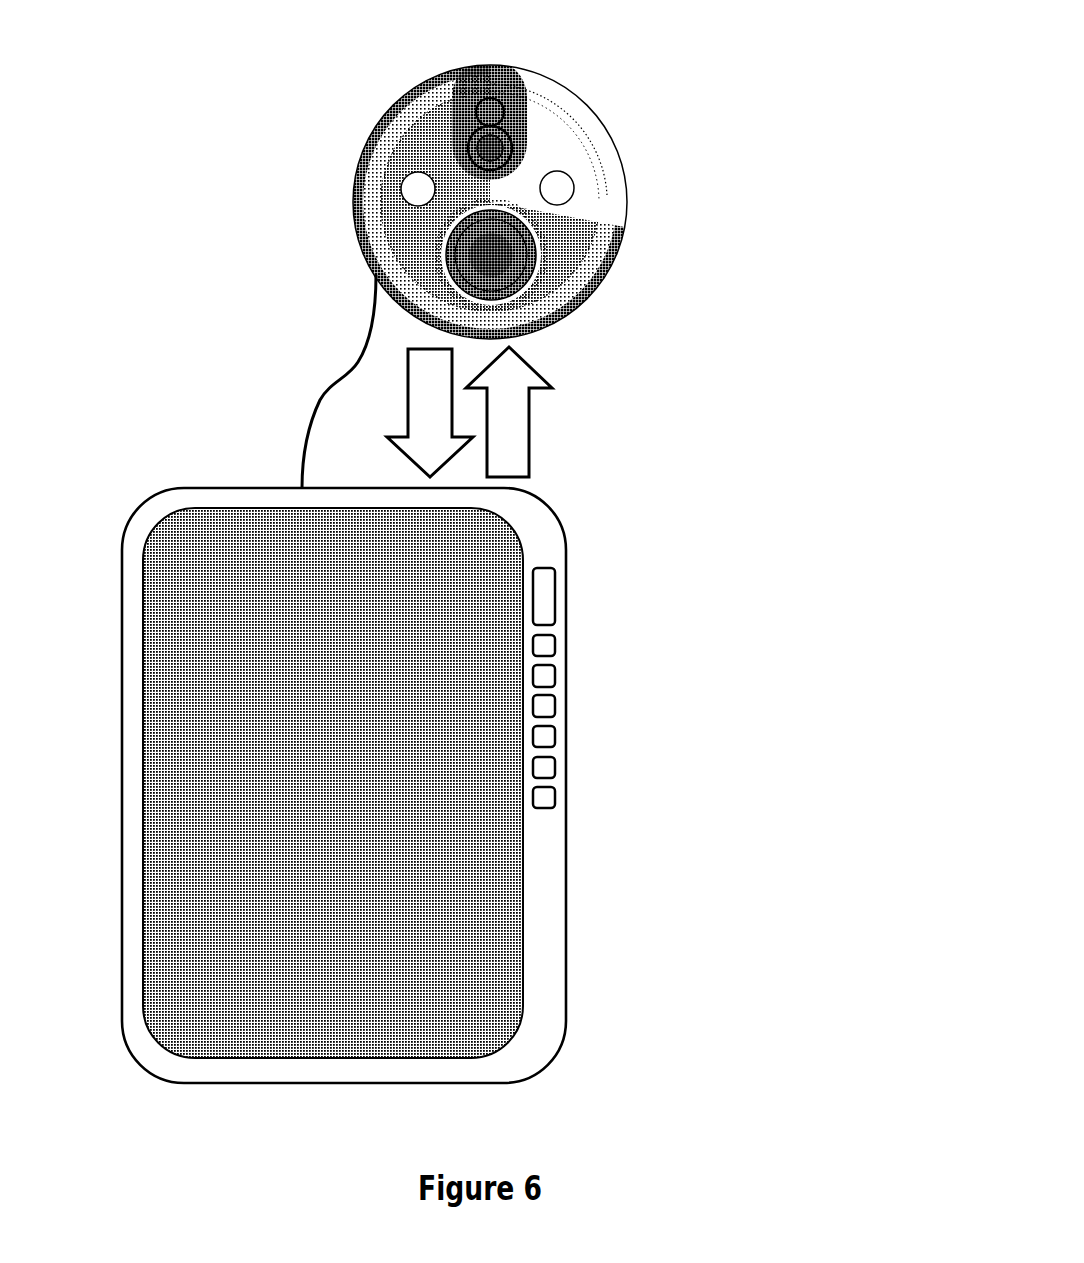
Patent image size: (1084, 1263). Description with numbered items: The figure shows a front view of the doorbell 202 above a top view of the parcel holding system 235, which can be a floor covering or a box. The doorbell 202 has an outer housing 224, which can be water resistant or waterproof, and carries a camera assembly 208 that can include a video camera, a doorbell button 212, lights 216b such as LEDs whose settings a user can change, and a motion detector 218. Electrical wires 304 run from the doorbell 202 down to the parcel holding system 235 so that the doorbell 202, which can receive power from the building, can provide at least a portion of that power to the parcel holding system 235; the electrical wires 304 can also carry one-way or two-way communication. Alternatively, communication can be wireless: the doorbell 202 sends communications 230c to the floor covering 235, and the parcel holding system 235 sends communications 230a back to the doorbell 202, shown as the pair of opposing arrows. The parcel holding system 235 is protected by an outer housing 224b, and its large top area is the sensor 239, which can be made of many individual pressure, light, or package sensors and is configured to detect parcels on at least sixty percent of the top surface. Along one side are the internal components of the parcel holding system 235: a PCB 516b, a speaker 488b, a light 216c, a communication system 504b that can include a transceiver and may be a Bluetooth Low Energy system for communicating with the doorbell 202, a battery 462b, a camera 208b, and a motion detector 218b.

The doorbell 202 is at (414, 175).
The camera assembly 208 is at (508, 138).
The doorbell button 212 is at (449, 263).
The light 216b is at (418, 171).
The motion detector 218 is at (495, 99).
The outer housing 224 is at (356, 229).
The communications 230a is at (530, 408).
The communications 230c is at (422, 467).
The parcel holding system 235 is at (526, 730).
The sensor 239 is at (522, 938).
The electrical wires 304 is at (372, 335).
The outer housing 224b is at (556, 513).
The PCB 516b is at (555, 596).
The speaker 488b is at (555, 645).
The light 216c is at (555, 676).
The communication system 504b is at (555, 706).
The battery 462b is at (555, 737).
The camera 208b is at (555, 767).
The motion detector 218b is at (555, 797).